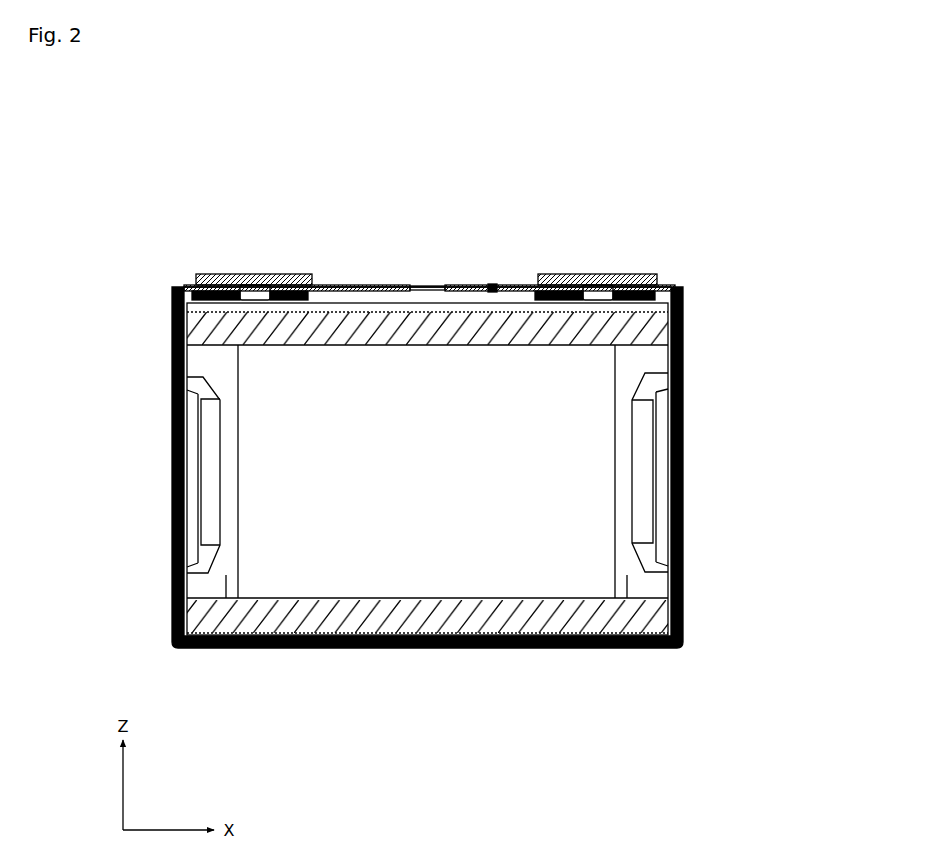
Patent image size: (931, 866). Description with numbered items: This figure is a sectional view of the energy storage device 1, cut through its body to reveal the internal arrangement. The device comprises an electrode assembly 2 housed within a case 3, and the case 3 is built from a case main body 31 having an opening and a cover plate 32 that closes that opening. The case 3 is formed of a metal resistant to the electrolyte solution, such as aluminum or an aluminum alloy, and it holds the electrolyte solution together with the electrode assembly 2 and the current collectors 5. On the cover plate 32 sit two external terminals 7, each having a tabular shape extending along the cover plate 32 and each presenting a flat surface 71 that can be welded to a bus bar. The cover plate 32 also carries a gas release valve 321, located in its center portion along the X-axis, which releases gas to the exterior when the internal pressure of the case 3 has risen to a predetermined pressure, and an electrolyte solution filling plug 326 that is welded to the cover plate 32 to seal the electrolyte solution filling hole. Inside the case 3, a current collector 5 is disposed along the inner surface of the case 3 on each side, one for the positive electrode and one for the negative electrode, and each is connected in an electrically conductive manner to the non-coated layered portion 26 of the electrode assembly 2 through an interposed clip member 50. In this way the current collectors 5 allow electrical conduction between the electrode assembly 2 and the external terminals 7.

The energy storage device 1 is at (688, 162).
The electrode assembly 2 is at (467, 640).
The non-coated layered portion 26 is at (226, 580).
The case 3 is at (766, 296).
The case main body 31 is at (686, 347).
The cover plate 32 is at (677, 284).
The gas release valve 321 is at (423, 286).
The electrolyte solution filling plug 326 is at (491, 285).
The current collector 5 is at (196, 512).
The clip member 50 is at (213, 440).
The external terminal 7 is at (240, 272).
The surface 71 is at (278, 272).